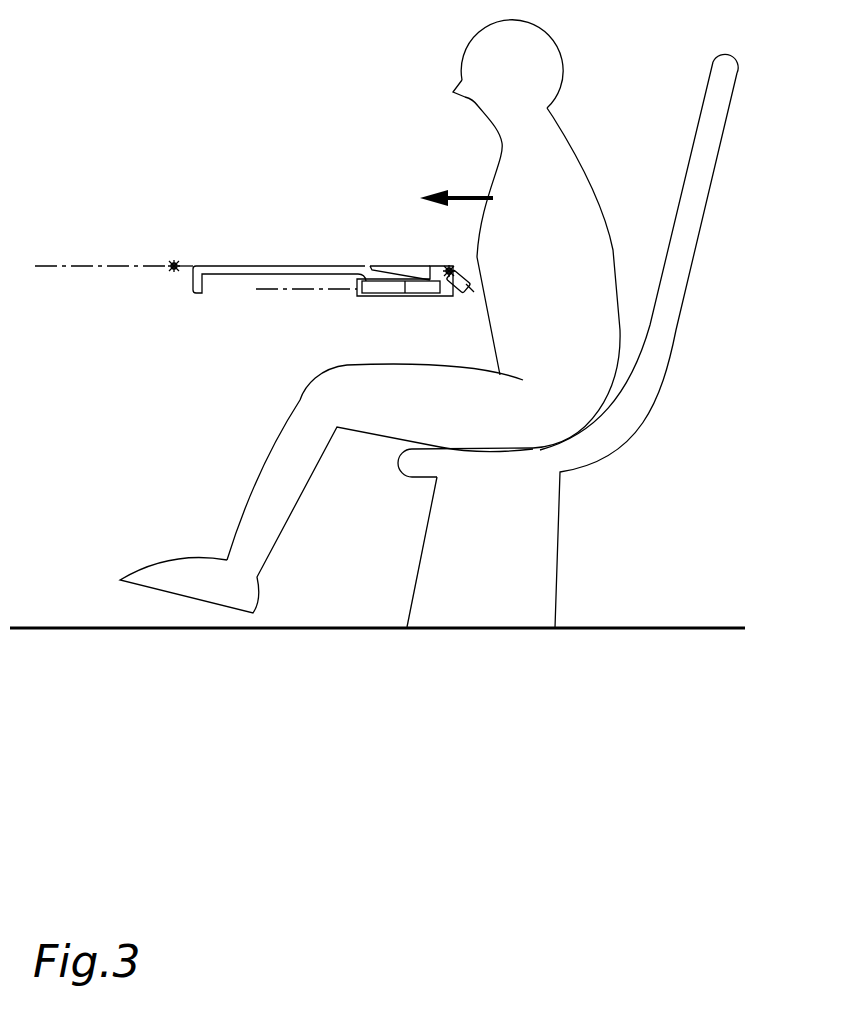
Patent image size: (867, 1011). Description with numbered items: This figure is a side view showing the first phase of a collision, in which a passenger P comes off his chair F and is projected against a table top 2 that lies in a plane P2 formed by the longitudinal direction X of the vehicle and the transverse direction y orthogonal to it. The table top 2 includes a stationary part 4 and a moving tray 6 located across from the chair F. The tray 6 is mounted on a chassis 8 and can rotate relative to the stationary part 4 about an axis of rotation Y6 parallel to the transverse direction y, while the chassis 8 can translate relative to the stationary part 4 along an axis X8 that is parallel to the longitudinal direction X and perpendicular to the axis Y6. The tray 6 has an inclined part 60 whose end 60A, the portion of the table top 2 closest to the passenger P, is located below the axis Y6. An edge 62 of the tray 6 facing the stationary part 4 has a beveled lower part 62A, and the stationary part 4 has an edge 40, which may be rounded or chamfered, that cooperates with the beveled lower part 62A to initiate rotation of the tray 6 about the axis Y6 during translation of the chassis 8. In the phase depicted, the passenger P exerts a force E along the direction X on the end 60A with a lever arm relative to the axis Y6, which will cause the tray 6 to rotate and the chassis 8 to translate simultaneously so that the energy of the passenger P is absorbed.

The table top 2 is at (242, 195).
The stationary part 4 is at (302, 264).
The moving tray 6 is at (402, 293).
The chassis 8 is at (450, 297).
The edge 40 is at (356, 254).
The inclined part 60 is at (470, 270).
The end 60A is at (478, 297).
The edge 62 is at (375, 262).
The beveled lower part 62A is at (370, 285).
The longitudinal direction X is at (89, 268).
The axis X8 is at (293, 291).
The transverse direction y is at (174, 262).
The axis of rotation Y6 is at (452, 262).
The force E is at (456, 185).
The passenger P is at (370, 316).
The plane P2 is at (111, 278).
The chair F is at (721, 77).